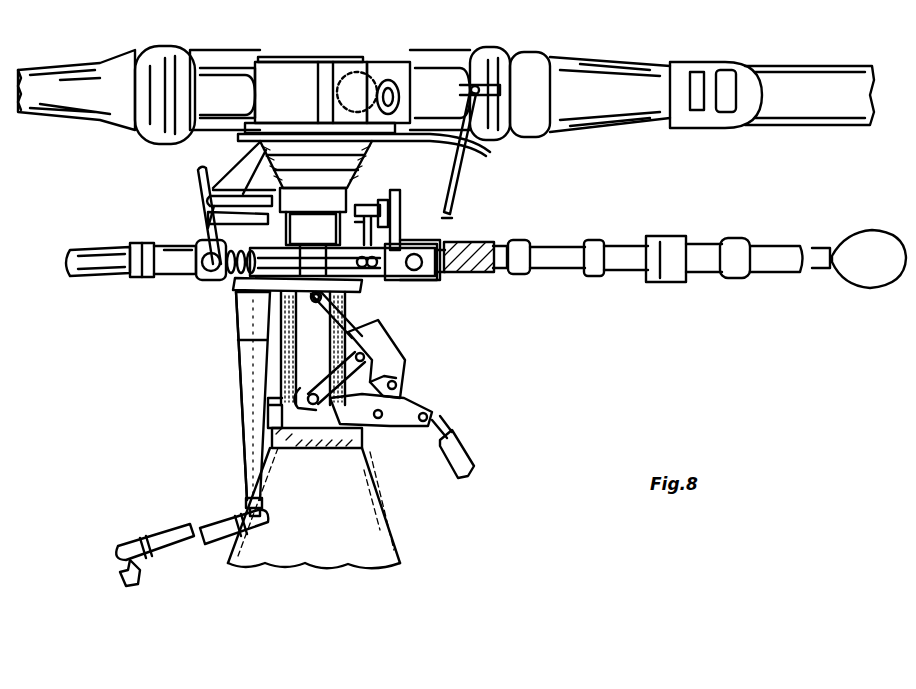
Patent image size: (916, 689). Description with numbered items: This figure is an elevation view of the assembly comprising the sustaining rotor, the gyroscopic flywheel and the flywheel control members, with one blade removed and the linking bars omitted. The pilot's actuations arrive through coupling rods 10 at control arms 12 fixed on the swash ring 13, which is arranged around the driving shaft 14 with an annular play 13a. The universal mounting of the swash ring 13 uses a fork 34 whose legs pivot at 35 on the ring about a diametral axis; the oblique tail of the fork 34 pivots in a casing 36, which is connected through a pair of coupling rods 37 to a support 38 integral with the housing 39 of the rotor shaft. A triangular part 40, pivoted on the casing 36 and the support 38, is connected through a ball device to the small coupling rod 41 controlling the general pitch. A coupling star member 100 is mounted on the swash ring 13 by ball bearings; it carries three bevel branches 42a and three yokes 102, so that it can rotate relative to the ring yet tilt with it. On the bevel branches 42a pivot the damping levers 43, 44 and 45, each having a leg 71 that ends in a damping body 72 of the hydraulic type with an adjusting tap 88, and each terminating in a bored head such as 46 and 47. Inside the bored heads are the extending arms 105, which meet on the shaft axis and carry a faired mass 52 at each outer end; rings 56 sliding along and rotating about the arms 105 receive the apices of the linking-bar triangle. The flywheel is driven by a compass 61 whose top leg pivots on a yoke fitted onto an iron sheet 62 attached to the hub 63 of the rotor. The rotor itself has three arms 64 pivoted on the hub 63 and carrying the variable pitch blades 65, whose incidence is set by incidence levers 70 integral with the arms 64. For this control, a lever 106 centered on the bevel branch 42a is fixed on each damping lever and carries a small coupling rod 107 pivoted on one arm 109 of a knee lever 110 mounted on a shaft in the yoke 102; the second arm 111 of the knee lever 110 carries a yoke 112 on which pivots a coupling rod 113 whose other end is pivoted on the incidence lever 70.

The coupling rod 10 is at (154, 540).
The control arm 12 is at (248, 388).
The swash ring 13 is at (370, 275).
The annular play 13a is at (253, 316).
The driving shaft 14 is at (264, 352).
The fork 34 is at (342, 326).
The pivot 35 is at (315, 304).
The casing 36 is at (390, 352).
The coupling rod 37 is at (330, 378).
The support 38 is at (275, 414).
The housing 39 is at (368, 470).
The triangular part 40 is at (410, 400).
The small coupling rod 41 is at (466, 450).
The bevel branch 42a is at (298, 258).
The damping lever 43 is at (466, 252).
The damping lever 44 is at (210, 282).
The damping lever 45 is at (408, 244).
The bored head 46 is at (516, 248).
The bored head 47 is at (150, 277).
The faired mass 52 is at (868, 278).
The ring 56 is at (700, 250).
The compass 61 is at (256, 176).
The iron sheet 62 is at (318, 141).
The hub 63 is at (296, 72).
The arm 64 is at (70, 78).
The variable pitch blade 65 is at (782, 80).
The incidence lever 70 is at (515, 90).
The leg 71 is at (255, 290).
The damping body 72 is at (300, 141).
The adjusting tap 88 is at (445, 275).
The coupling star member 100 is at (332, 262).
The yoke 102 is at (430, 276).
The extending arm 105 is at (90, 264).
The lever 106 is at (282, 200).
The small coupling rod 107 is at (206, 200).
The arm 109 is at (208, 218).
The knee lever 110 is at (252, 276).
The arm 111 is at (240, 274).
The yoke 112 is at (228, 274).
The coupling rod 113 is at (198, 180).